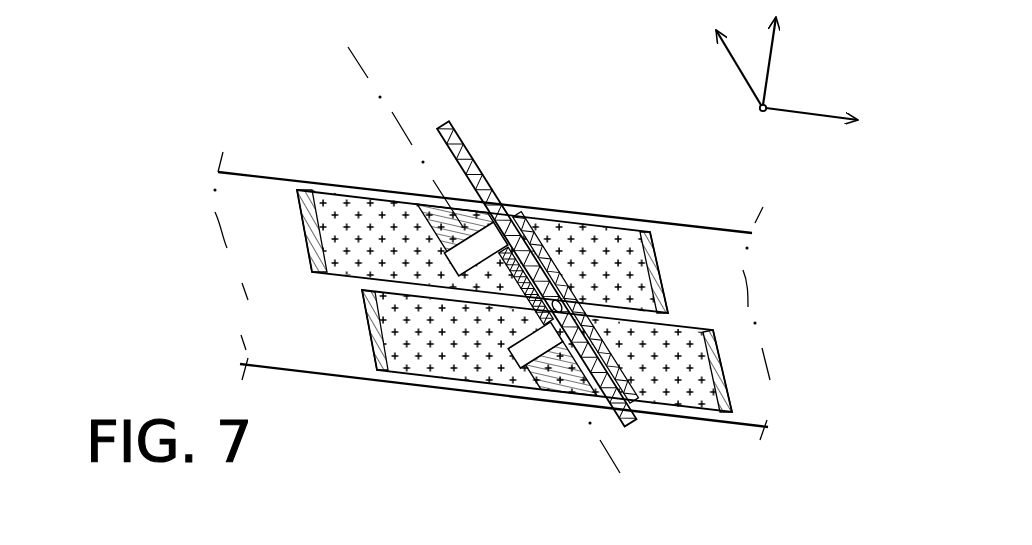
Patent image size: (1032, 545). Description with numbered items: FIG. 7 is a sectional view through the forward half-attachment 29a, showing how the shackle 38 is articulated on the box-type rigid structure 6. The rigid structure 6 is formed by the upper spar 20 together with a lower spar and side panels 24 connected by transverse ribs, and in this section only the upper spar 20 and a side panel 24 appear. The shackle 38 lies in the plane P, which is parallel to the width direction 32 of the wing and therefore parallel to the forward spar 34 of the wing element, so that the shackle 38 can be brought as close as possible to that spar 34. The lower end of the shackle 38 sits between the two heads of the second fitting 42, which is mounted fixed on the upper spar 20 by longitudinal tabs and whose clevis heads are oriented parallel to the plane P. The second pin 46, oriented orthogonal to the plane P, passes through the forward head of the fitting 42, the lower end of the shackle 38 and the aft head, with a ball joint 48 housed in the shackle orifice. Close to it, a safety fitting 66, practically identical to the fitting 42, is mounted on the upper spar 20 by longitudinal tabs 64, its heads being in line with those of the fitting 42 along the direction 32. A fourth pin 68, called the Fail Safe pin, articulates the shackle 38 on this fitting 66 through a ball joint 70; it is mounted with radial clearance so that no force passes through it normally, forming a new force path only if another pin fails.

The rigid structure 6 is at (175, 192).
The side panel 24 is at (244, 172).
The upper spar 20 is at (255, 240).
The shackle 38 is at (500, 300).
The plane P is at (370, 78).
The forward half-attachment 29a is at (288, 88).
The forward spar 34 is at (452, 131).
The ball joint 48 is at (500, 210).
The ball joint 70 is at (575, 386).
The second pin 46 is at (441, 257).
The fourth pin 68 is at (515, 373).
The second fitting 42 is at (391, 188).
The longitudinal tabs 64 is at (417, 365).
The safety fitting 66 is at (465, 391).
The width direction 32 is at (740, 70).